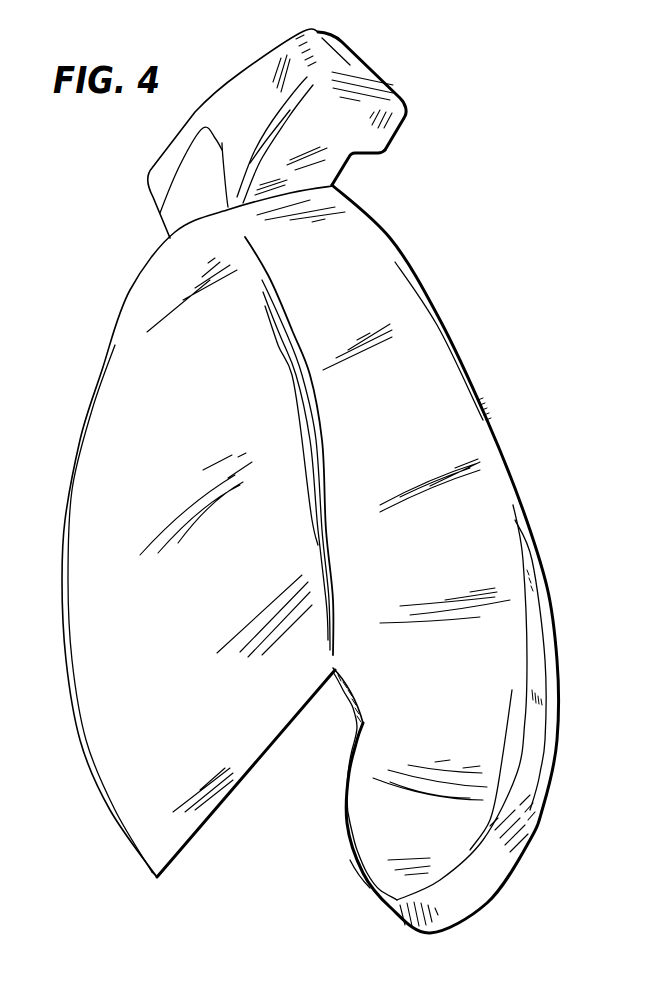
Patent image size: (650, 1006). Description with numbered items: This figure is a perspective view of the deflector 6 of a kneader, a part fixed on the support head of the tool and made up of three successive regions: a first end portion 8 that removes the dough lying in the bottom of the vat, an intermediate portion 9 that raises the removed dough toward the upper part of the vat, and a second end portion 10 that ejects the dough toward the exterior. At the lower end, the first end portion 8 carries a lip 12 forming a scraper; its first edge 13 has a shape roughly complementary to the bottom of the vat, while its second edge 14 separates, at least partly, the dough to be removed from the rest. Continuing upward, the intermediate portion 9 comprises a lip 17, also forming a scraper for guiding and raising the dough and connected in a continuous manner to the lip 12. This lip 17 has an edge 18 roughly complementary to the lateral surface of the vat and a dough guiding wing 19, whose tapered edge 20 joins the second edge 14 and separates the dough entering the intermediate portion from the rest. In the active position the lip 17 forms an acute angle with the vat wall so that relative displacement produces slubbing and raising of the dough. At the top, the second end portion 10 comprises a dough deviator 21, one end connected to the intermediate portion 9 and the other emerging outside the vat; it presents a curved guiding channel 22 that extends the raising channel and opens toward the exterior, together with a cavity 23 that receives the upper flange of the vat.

The deflector 6 is at (430, 260).
The first end portion 8 is at (386, 920).
The intermediate portion 9 is at (545, 545).
The second end portion 10 is at (395, 69).
The lip 12 is at (360, 878).
The first edge 13 is at (484, 906).
The second edge 14 is at (356, 773).
The lip 17 is at (492, 506).
The edge 18 is at (489, 398).
The dough guiding wing 19 is at (118, 403).
The tapered edge 20 is at (247, 773).
The dough deviator 21 is at (407, 90).
The curved guiding channel 22 is at (346, 100).
The cavity 23 is at (362, 164).